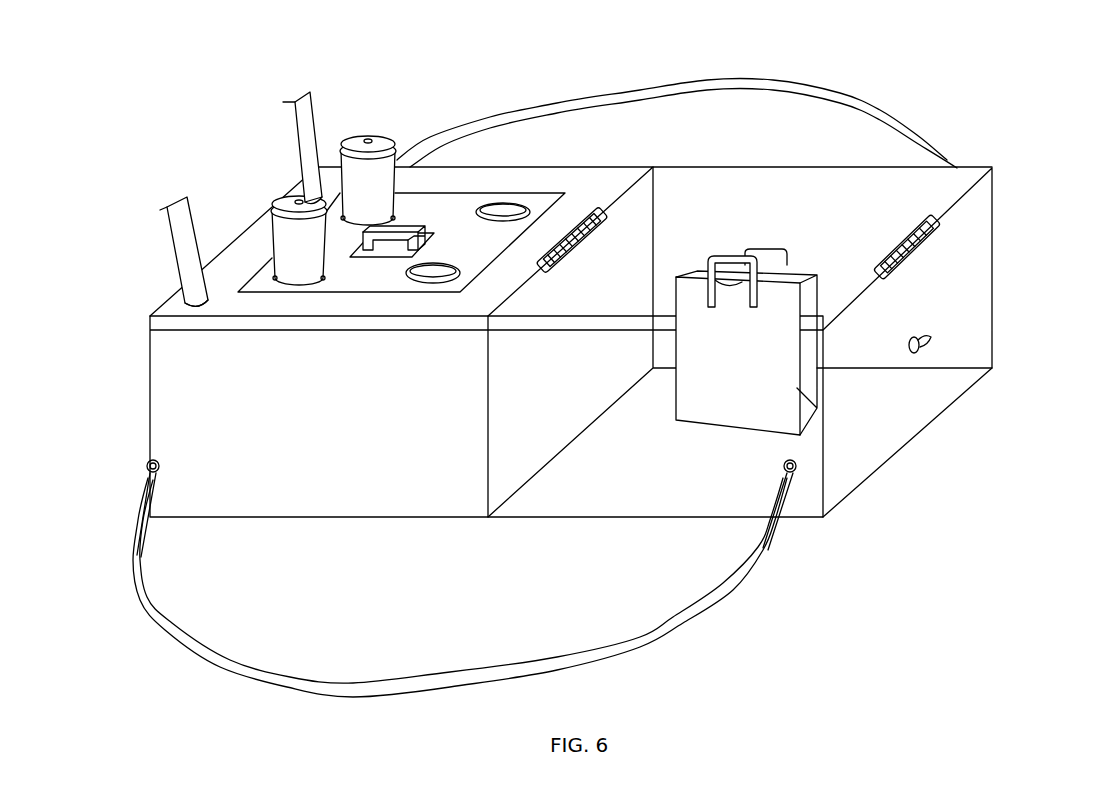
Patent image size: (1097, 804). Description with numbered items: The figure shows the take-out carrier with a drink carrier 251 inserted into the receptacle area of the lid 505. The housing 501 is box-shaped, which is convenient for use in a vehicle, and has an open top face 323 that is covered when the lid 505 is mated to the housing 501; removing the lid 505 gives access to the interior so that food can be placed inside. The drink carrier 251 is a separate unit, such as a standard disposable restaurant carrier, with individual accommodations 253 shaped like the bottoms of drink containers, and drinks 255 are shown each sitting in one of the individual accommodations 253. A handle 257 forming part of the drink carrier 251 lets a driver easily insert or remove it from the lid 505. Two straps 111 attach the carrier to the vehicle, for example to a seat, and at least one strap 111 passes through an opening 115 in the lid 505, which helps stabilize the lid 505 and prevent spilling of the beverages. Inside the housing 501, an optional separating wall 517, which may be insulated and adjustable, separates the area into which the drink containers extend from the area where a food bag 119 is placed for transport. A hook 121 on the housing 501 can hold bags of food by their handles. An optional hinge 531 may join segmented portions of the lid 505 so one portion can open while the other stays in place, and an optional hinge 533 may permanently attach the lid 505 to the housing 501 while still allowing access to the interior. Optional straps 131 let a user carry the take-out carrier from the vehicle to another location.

The strap 111 is at (297, 142).
The opening 115 is at (305, 183).
The drinks 255 is at (317, 205).
The drink carrier 251 is at (430, 210).
The individual accommodations 253 is at (490, 213).
The handle 257 is at (385, 250).
The hinge 531 is at (580, 222).
The hinge 533 is at (923, 250).
The top face 323 is at (755, 182).
The lid 505 is at (230, 305).
The food bag 119 is at (770, 287).
The hook 121 is at (923, 343).
The straps 131 is at (900, 107).
The separating wall 517 is at (560, 405).
The housing 501 is at (875, 405).